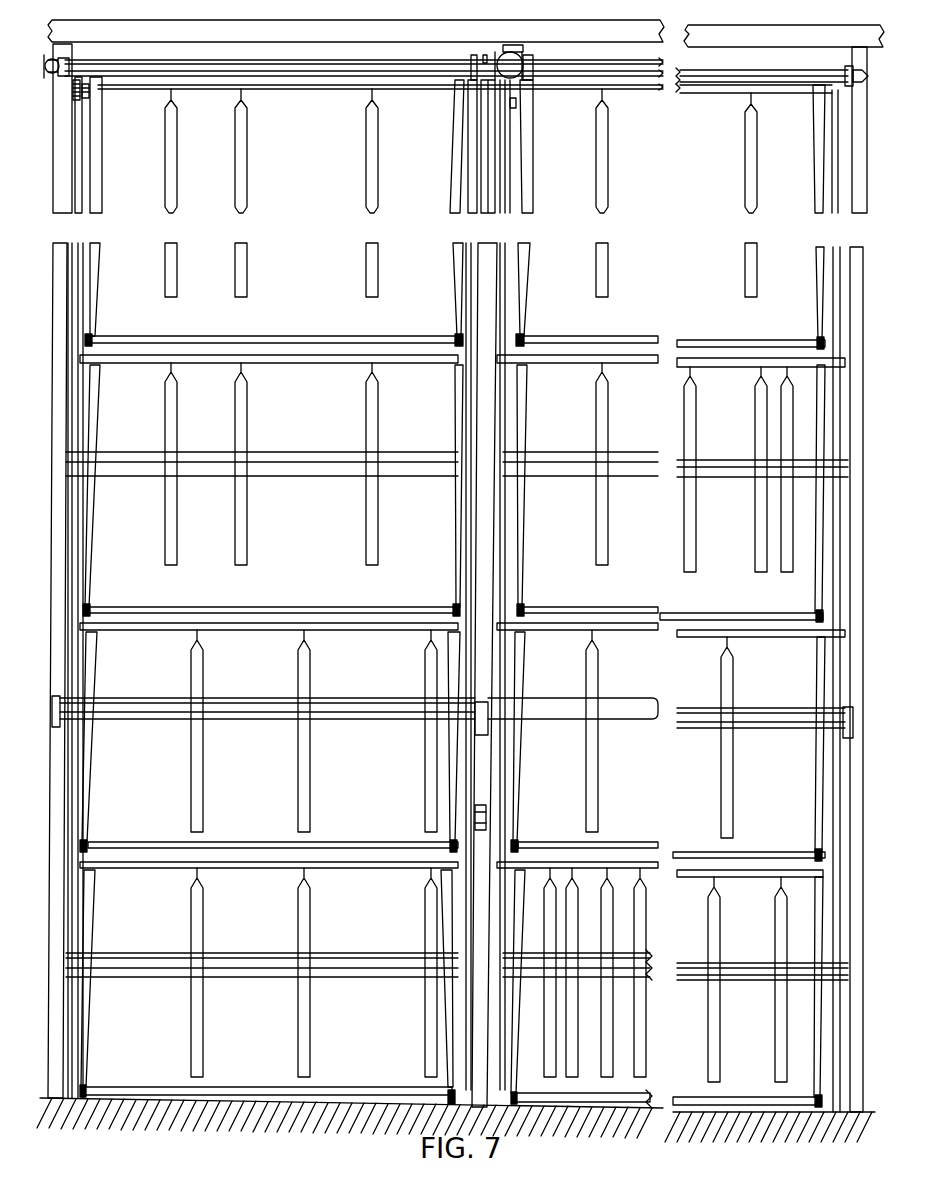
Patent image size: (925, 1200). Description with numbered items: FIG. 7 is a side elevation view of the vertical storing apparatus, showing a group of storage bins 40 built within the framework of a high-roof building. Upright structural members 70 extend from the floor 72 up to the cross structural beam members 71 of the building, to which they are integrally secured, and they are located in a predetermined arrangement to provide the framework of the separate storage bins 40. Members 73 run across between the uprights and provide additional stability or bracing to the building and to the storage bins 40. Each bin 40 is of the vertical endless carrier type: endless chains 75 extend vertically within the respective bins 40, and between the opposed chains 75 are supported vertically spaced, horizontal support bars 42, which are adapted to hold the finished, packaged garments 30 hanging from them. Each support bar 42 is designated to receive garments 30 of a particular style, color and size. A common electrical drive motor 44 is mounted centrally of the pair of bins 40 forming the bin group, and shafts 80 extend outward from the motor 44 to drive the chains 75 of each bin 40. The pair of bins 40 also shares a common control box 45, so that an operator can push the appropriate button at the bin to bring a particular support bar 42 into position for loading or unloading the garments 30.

The packaged garments 30 is at (606, 197).
The bin 40 is at (166, 1050).
The support bar 42 is at (318, 88).
The electrical drive motor 44 is at (520, 66).
The control box 45 is at (482, 818).
The upright structural member 70 is at (60, 562).
The cross structural beam member 71 is at (304, 34).
The floor 72 is at (372, 1090).
The bracing member 73 is at (334, 470).
The endless chain 75 is at (78, 247).
The shaft 80 is at (147, 64).